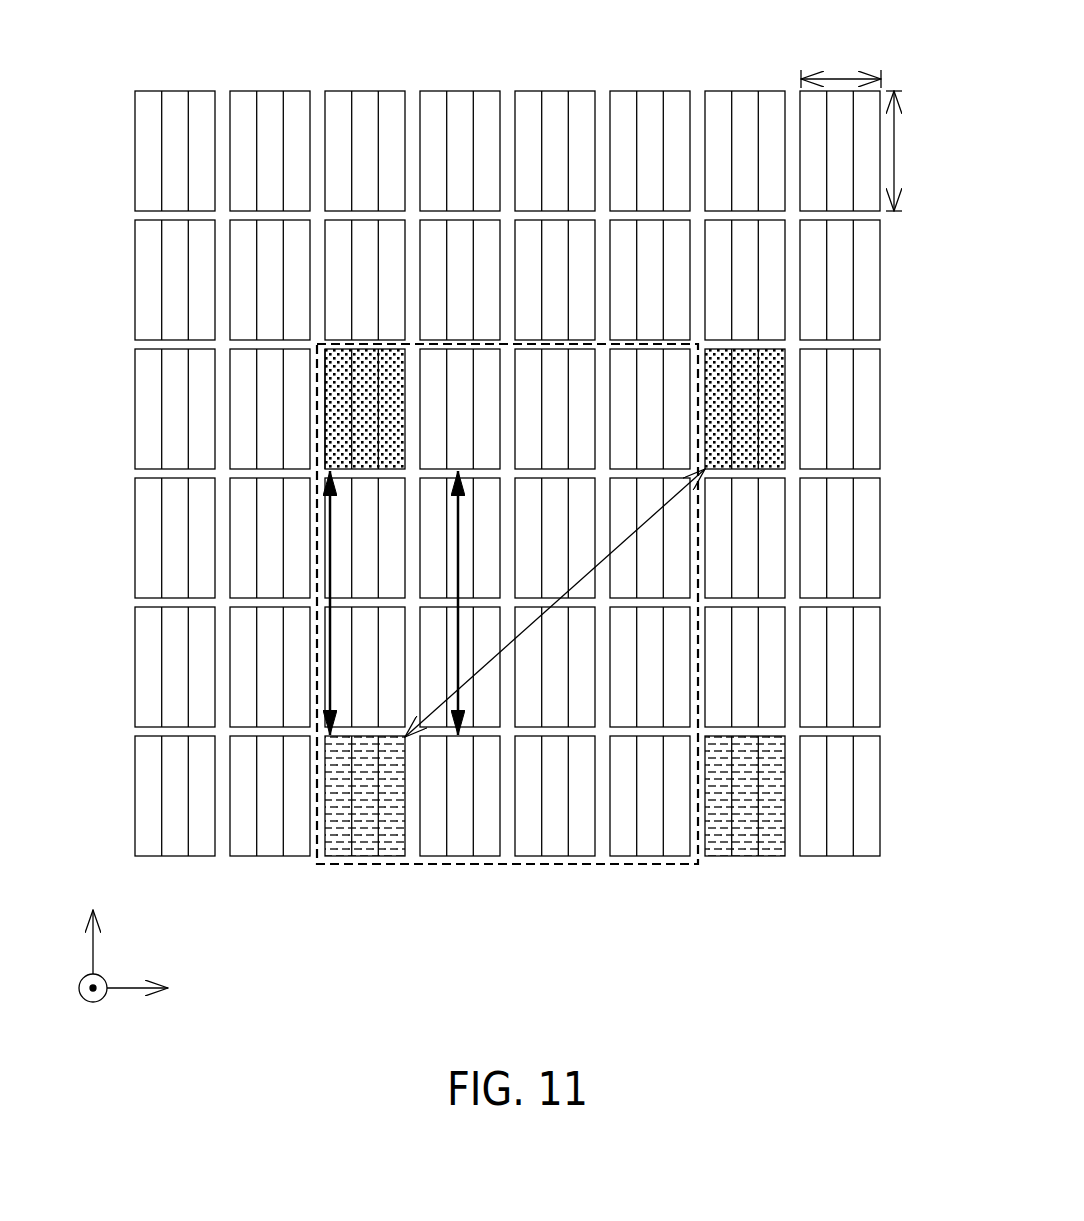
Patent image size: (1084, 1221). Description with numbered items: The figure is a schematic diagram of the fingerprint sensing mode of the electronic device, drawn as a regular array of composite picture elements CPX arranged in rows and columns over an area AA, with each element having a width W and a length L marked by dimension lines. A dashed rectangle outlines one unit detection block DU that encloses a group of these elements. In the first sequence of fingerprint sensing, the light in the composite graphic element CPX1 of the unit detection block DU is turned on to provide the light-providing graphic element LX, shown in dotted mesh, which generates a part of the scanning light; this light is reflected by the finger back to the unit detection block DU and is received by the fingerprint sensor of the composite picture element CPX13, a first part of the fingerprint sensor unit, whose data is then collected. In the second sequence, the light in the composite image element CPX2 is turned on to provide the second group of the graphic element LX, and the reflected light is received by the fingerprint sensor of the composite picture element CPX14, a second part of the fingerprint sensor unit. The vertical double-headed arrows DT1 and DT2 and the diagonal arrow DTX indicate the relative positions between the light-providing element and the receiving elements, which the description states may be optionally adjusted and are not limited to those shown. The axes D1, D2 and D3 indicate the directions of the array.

The active area AA is at (753, 58).
The width of pixel W is at (841, 67).
The length of pixel L is at (901, 151).
The composite graphic element CPX1 is at (375, 344).
The composite image element CPX2 is at (460, 343).
The composite picture element CPX13 is at (365, 857).
The composite picture element CPX14 is at (452, 857).
The color pixel CPX is at (172, 857).
The unit detection block DU is at (698, 808).
The light-providing graphic element LX is at (322, 411).
The first distance DT1 is at (330, 633).
The second distance DT2 is at (458, 555).
The distance DTX is at (626, 543).
The first direction D1 is at (154, 989).
The second direction D2 is at (91, 927).
The third direction D3 is at (89, 1004).